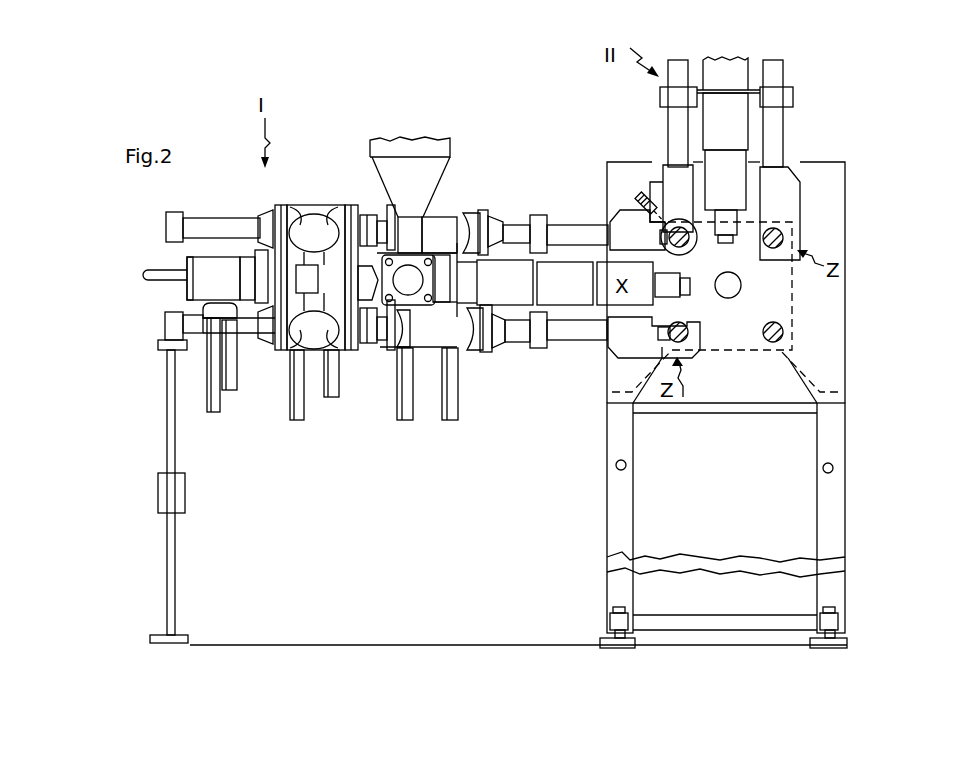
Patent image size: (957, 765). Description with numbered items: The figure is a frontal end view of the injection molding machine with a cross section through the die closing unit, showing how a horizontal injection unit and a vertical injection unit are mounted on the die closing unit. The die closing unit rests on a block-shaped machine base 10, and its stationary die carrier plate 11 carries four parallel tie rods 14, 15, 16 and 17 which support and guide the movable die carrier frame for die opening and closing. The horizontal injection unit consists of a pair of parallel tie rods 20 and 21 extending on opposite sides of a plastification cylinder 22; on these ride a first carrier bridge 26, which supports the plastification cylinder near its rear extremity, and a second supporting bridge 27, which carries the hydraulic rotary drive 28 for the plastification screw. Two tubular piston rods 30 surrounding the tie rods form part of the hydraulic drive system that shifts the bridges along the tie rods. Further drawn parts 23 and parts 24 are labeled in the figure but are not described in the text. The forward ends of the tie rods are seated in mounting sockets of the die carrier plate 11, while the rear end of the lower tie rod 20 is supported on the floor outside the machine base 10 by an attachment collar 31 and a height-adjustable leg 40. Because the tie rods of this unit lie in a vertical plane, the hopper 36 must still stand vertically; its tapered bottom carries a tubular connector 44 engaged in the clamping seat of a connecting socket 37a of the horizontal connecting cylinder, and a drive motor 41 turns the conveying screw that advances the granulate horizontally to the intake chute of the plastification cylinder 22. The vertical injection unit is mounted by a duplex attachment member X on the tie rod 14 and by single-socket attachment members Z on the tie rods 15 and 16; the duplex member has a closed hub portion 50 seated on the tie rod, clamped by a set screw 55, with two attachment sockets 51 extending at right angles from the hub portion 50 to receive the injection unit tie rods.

The machine base 10 is at (622, 513).
The stationary die carrier plate 11 is at (832, 180).
The tie rod 14 is at (640, 292).
The tie rod 15 is at (683, 327).
The tie rod 16 is at (788, 237).
The tie rod 17 is at (783, 338).
The injection unit tie rod 20 is at (685, 125).
The injection unit tie rod 21 is at (775, 143).
The plastification cylinder 22 is at (752, 90).
The spindle 23 is at (742, 73).
The collar 24 is at (787, 100).
The first carrier bridge 26 is at (438, 242).
The second supporting bridge 27 is at (303, 238).
The hydraulic rotary drive 28 is at (205, 268).
The tubular piston rod 30 is at (368, 232).
The attachment collar 31 is at (167, 330).
The hopper 36 is at (410, 180).
The connecting socket 37a is at (410, 242).
The tubular connector 44 is at (410, 235).
The height-adjustable leg 40 is at (172, 442).
The drive motor 41 is at (407, 282).
The hub portion 50 is at (696, 240).
The attachment socket 51 is at (617, 227).
The set screw 55 is at (640, 194).